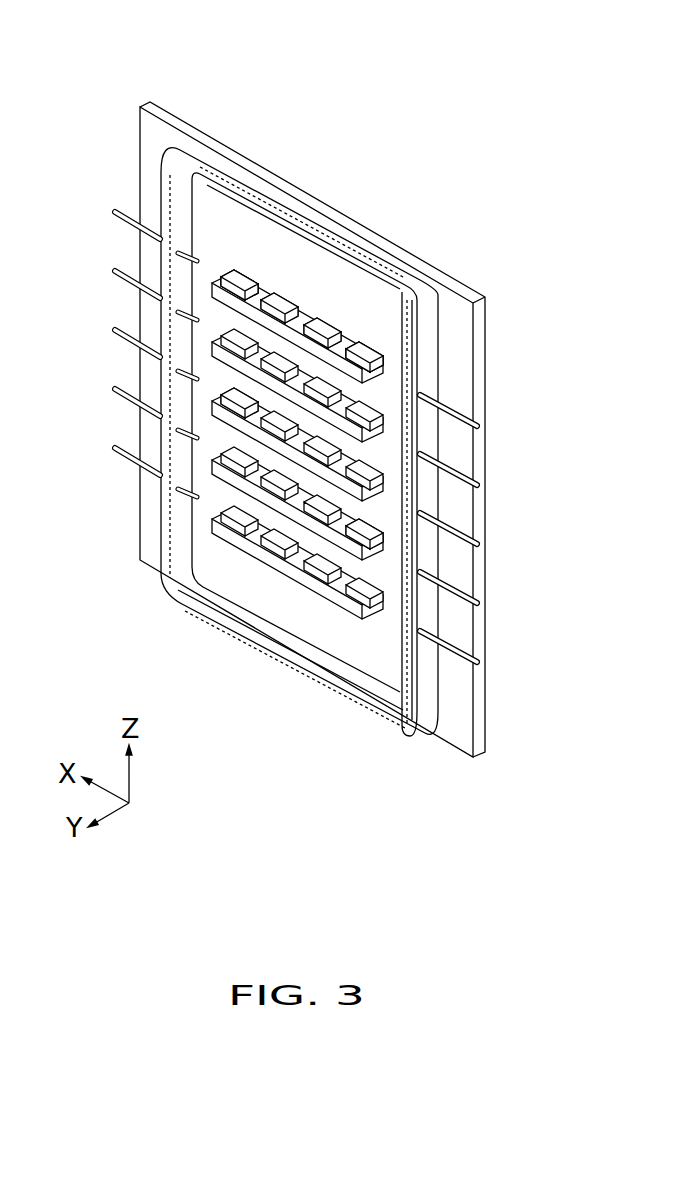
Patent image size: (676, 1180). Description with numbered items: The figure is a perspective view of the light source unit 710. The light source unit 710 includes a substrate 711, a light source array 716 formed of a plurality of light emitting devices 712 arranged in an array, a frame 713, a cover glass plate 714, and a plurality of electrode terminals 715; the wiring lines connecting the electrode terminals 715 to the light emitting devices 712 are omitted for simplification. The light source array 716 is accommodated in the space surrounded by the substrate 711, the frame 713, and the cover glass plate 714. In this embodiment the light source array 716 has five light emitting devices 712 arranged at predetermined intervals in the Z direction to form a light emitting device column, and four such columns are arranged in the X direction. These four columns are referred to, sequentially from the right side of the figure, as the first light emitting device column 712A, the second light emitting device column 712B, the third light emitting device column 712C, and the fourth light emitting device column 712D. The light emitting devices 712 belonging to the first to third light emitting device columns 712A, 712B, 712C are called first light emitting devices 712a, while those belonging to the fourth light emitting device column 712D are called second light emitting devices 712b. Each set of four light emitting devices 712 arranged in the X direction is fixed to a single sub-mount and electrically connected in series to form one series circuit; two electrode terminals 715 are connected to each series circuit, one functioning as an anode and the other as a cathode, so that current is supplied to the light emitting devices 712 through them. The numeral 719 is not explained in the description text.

The light source unit 710 is at (303, 389).
The substrate 711 is at (462, 330).
The light emitting devices 712 is at (310, 369).
The first light emitting devices 712a is at (362, 347).
The second light emitting devices 712b is at (232, 280).
The first light emitting device column 712A is at (357, 327).
The second light emitting device column 712B is at (326, 305).
The third light emitting device column 712C is at (270, 283).
The fourth light emitting device column 712D is at (246, 268).
The frame 713 is at (430, 678).
The cover glass plate 714 is at (366, 665).
The electrode terminals 715 is at (117, 212).
The light source array 716 is at (250, 575).
The bottom electrode row 719 is at (328, 592).